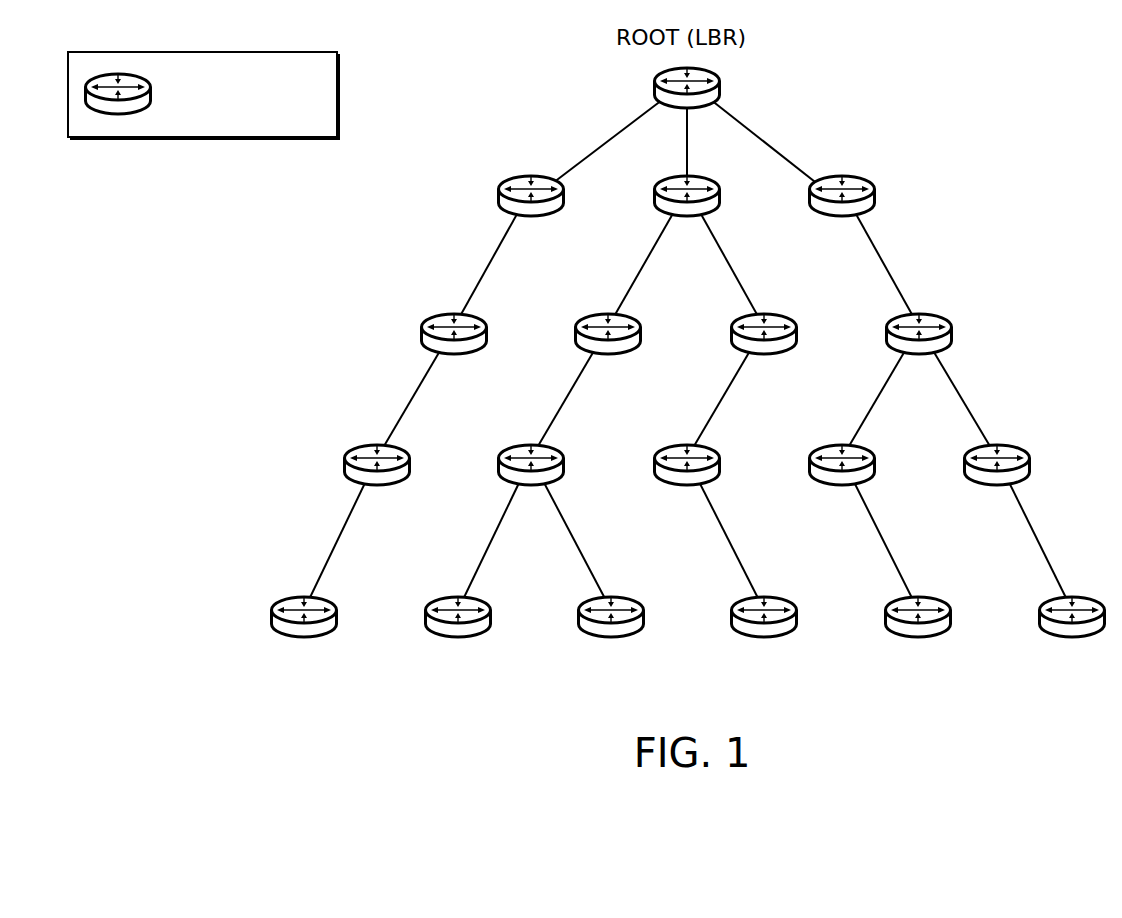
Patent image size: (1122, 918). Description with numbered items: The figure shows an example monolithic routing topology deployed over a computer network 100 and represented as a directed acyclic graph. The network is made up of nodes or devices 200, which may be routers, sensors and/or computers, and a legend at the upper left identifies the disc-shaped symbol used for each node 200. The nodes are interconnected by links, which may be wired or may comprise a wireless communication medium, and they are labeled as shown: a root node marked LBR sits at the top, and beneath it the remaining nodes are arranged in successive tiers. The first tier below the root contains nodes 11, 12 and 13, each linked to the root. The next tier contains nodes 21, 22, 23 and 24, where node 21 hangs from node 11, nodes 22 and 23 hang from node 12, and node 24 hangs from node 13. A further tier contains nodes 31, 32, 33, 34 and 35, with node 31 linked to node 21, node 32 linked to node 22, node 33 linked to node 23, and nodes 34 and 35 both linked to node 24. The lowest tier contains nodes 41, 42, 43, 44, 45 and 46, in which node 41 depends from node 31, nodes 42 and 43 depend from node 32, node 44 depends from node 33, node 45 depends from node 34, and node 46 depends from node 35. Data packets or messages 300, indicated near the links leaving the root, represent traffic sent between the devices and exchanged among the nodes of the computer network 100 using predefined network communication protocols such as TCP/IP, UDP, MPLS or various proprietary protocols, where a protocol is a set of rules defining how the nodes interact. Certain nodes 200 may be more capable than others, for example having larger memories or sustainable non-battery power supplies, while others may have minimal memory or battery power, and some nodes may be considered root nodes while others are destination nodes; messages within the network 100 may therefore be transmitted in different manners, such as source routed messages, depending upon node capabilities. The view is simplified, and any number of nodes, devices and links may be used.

The computer network 100 is at (946, 86).
The node 200 is at (203, 95).
The data packets or messages 300 is at (758, 94).
The node 11 is at (531, 213).
The node 12 is at (704, 201).
The node 13 is at (842, 214).
The node 21 is at (454, 353).
The node 22 is at (608, 353).
The node 23 is at (764, 353).
The node 24 is at (919, 354).
The node 31 is at (377, 485).
The node 32 is at (531, 485).
The node 33 is at (687, 485).
The node 34 is at (842, 485).
The node 35 is at (997, 485).
The node 41 is at (304, 636).
The node 42 is at (458, 636).
The node 43 is at (611, 636).
The node 44 is at (764, 636).
The node 45 is at (918, 636).
The node 46 is at (1072, 636).